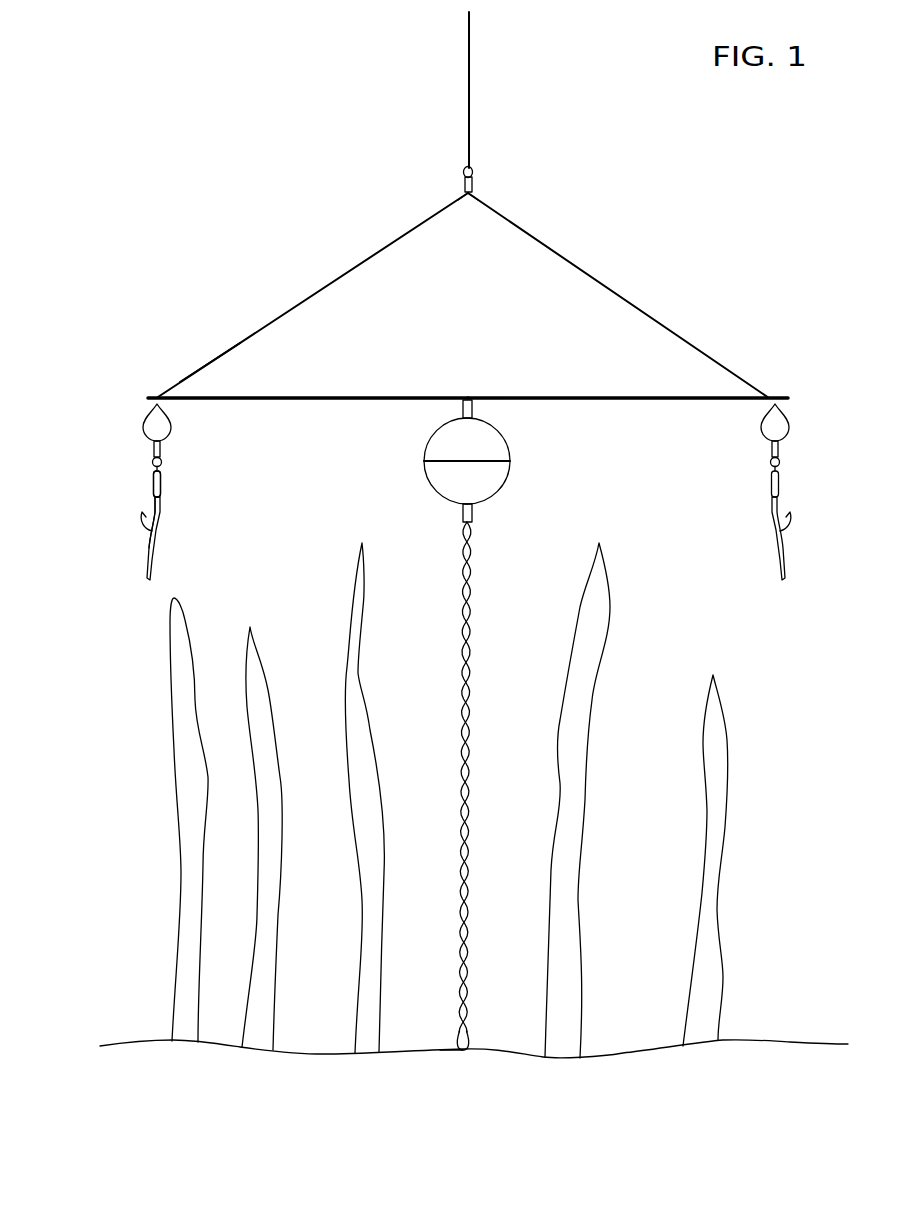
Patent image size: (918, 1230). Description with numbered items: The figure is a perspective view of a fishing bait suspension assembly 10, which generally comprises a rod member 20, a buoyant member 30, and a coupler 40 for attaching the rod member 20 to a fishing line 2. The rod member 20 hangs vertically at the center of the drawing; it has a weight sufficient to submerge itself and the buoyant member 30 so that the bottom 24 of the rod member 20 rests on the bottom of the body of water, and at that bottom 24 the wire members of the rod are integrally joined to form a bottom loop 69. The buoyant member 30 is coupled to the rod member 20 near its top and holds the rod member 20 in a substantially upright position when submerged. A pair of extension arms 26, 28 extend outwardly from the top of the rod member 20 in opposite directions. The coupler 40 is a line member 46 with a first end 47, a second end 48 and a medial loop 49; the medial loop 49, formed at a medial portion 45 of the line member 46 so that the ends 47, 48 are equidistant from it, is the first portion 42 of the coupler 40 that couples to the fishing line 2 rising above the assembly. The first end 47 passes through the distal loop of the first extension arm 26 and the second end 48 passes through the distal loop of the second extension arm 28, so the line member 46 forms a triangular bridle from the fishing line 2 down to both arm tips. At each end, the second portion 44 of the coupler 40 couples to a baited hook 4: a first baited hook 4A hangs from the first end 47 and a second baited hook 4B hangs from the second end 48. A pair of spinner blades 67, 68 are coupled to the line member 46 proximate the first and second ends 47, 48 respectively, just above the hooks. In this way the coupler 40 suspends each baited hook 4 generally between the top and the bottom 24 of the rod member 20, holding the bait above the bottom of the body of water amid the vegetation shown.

The fishing line 2 is at (470, 49).
The baited hook 4 is at (116, 512).
The first baited hook 4A is at (787, 530).
The second baited hook 4B is at (143, 527).
The fishing bait suspension assembly 10 is at (208, 327).
The rod member 20 is at (470, 742).
The bottom of the rod member 24 is at (449, 1037).
The first extension arm 26 is at (587, 400).
The second extension arm 28 is at (351, 400).
The buoyant member 30 is at (505, 480).
The coupler 40 is at (388, 213).
The first portion of the coupler 42 is at (455, 168).
The second portion of the coupler 44 is at (195, 487).
The medial portion of the line member 45 is at (497, 157).
The line member 46 is at (610, 287).
The first end of the line member 47 is at (780, 451).
The second end of the line member 48 is at (155, 452).
The medial loop 49 is at (480, 175).
The first spinner blade 67 is at (779, 401).
The second spinner blade 68 is at (150, 403).
The bottom loop 69 is at (467, 1042).